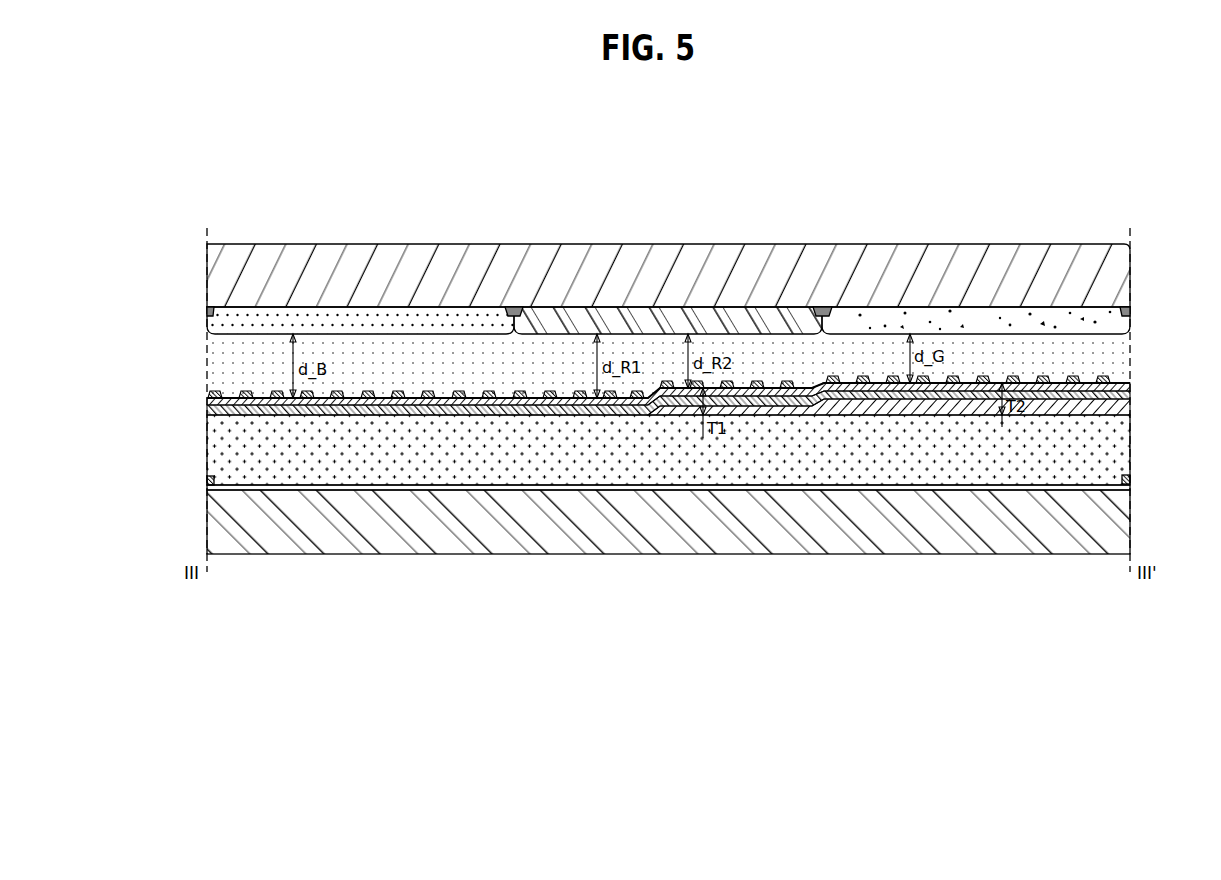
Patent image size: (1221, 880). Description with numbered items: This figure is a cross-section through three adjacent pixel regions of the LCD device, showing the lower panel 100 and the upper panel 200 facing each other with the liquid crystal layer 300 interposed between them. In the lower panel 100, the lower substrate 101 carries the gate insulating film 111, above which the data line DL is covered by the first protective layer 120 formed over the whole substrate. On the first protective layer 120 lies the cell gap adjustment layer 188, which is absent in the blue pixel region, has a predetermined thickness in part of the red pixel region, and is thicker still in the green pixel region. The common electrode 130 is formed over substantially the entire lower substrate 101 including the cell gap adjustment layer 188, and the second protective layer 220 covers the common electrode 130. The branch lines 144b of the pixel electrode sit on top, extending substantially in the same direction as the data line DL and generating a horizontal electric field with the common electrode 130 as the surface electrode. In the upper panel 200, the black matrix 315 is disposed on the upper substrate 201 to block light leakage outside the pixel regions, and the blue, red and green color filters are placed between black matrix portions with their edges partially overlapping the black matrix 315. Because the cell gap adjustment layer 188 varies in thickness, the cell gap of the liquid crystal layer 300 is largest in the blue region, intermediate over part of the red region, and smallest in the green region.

The lower panel 100 is at (1137, 384).
The lower substrate 101 is at (207, 513).
The gate insulating film 111 is at (325, 490).
The first protective layer 120 is at (207, 450).
The common electrode 130 is at (207, 410).
The branch lines 144b is at (208, 396).
The cell gap adjustment layer 188 is at (898, 407).
The upper panel 200 is at (1137, 244).
The upper substrate 201 is at (668, 272).
The second protective layer 220 is at (207, 401).
The liquid crystal layer 300 is at (1137, 336).
The black matrix 315 is at (210, 306).
The data line DL is at (207, 479).